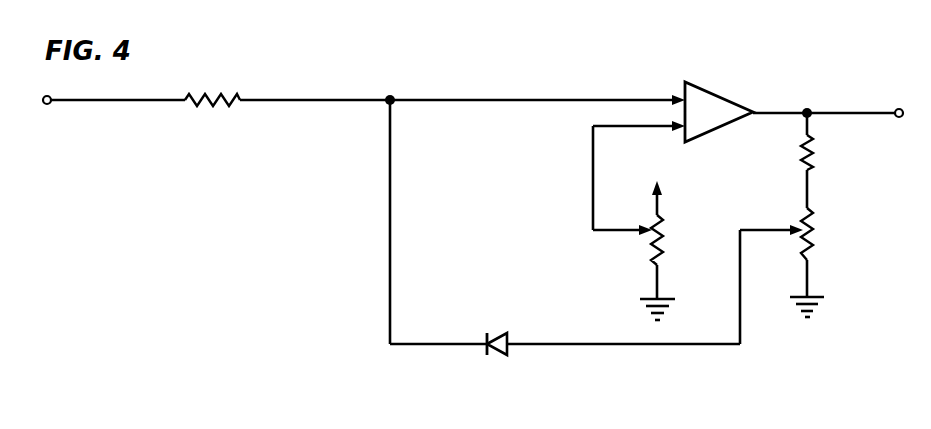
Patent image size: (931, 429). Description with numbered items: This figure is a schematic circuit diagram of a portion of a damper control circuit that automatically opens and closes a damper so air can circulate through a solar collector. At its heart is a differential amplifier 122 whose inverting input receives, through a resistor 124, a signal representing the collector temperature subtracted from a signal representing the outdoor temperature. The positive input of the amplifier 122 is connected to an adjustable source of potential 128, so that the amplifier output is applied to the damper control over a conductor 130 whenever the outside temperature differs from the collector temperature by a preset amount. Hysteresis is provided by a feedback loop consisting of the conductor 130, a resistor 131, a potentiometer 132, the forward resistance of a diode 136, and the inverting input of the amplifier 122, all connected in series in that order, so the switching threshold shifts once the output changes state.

The differential amplifier 122 is at (723, 104).
The resistor 124 is at (220, 97).
The adjustable source of potential 128 is at (674, 242).
The conductor 130 is at (855, 113).
The resistor 131 is at (816, 162).
The potentiometer 132 is at (816, 238).
The diode 136 is at (497, 357).